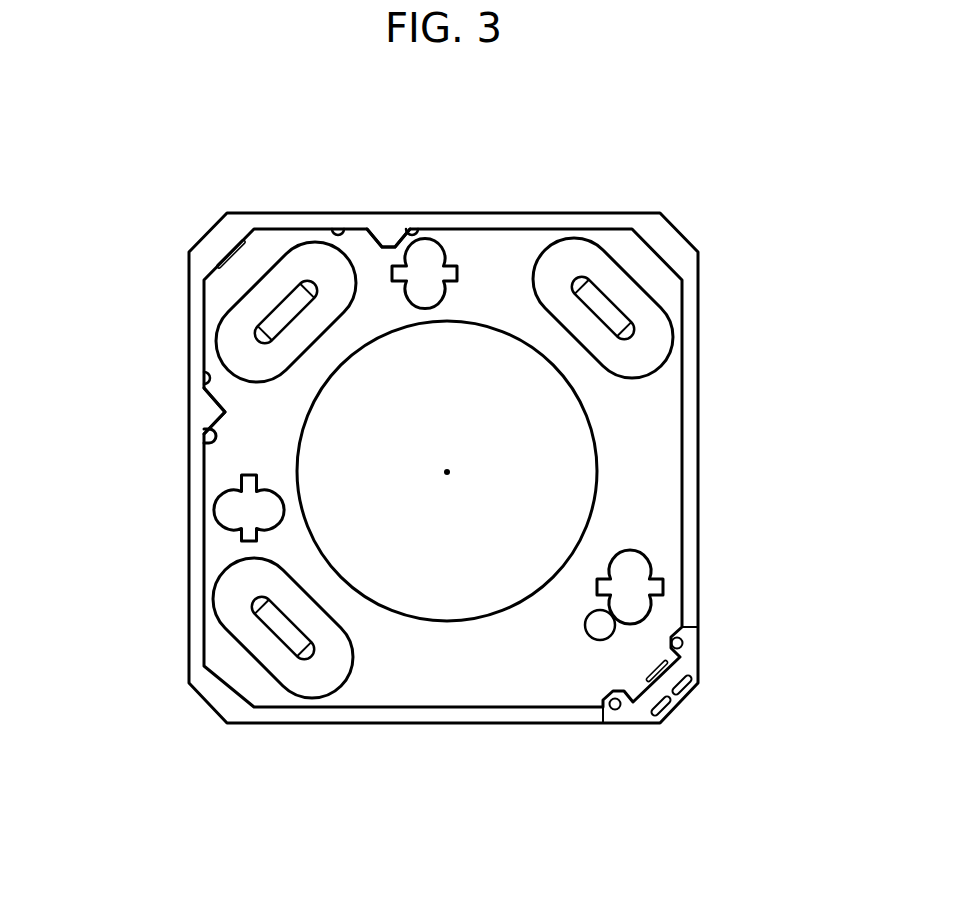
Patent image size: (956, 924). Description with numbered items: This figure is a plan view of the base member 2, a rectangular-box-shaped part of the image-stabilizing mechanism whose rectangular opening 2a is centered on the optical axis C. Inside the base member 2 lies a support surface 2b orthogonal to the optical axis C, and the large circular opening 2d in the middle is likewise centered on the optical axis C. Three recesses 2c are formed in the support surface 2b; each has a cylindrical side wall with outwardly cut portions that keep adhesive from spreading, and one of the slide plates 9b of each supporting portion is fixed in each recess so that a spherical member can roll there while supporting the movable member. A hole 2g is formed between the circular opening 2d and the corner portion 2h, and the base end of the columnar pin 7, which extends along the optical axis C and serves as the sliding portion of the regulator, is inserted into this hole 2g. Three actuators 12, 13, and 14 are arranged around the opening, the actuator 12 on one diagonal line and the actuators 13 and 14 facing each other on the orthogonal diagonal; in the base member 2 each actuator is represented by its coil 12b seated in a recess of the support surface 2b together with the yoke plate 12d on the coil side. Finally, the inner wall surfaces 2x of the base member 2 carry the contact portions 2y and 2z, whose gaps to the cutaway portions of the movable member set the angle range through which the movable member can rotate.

The base member 2 is at (700, 398).
The rectangular opening 2a is at (678, 444).
The support surface 2b is at (662, 498).
The recess 2c is at (430, 261).
The circular opening 2d is at (477, 330).
The hole 2g is at (594, 635).
The corner portion 2h is at (680, 704).
The inner wall surface 2x is at (335, 229).
The contact portion 2y is at (411, 240).
The contact portion 2z is at (216, 438).
The pin 7 is at (608, 624).
The slide plate 9b is at (399, 268).
The actuator 12 is at (243, 278).
The coil 12b is at (440, 469).
The yoke plate 12d is at (305, 289).
The actuator 13 is at (250, 655).
The actuator 14 is at (643, 276).
The optical axis C is at (450, 472).